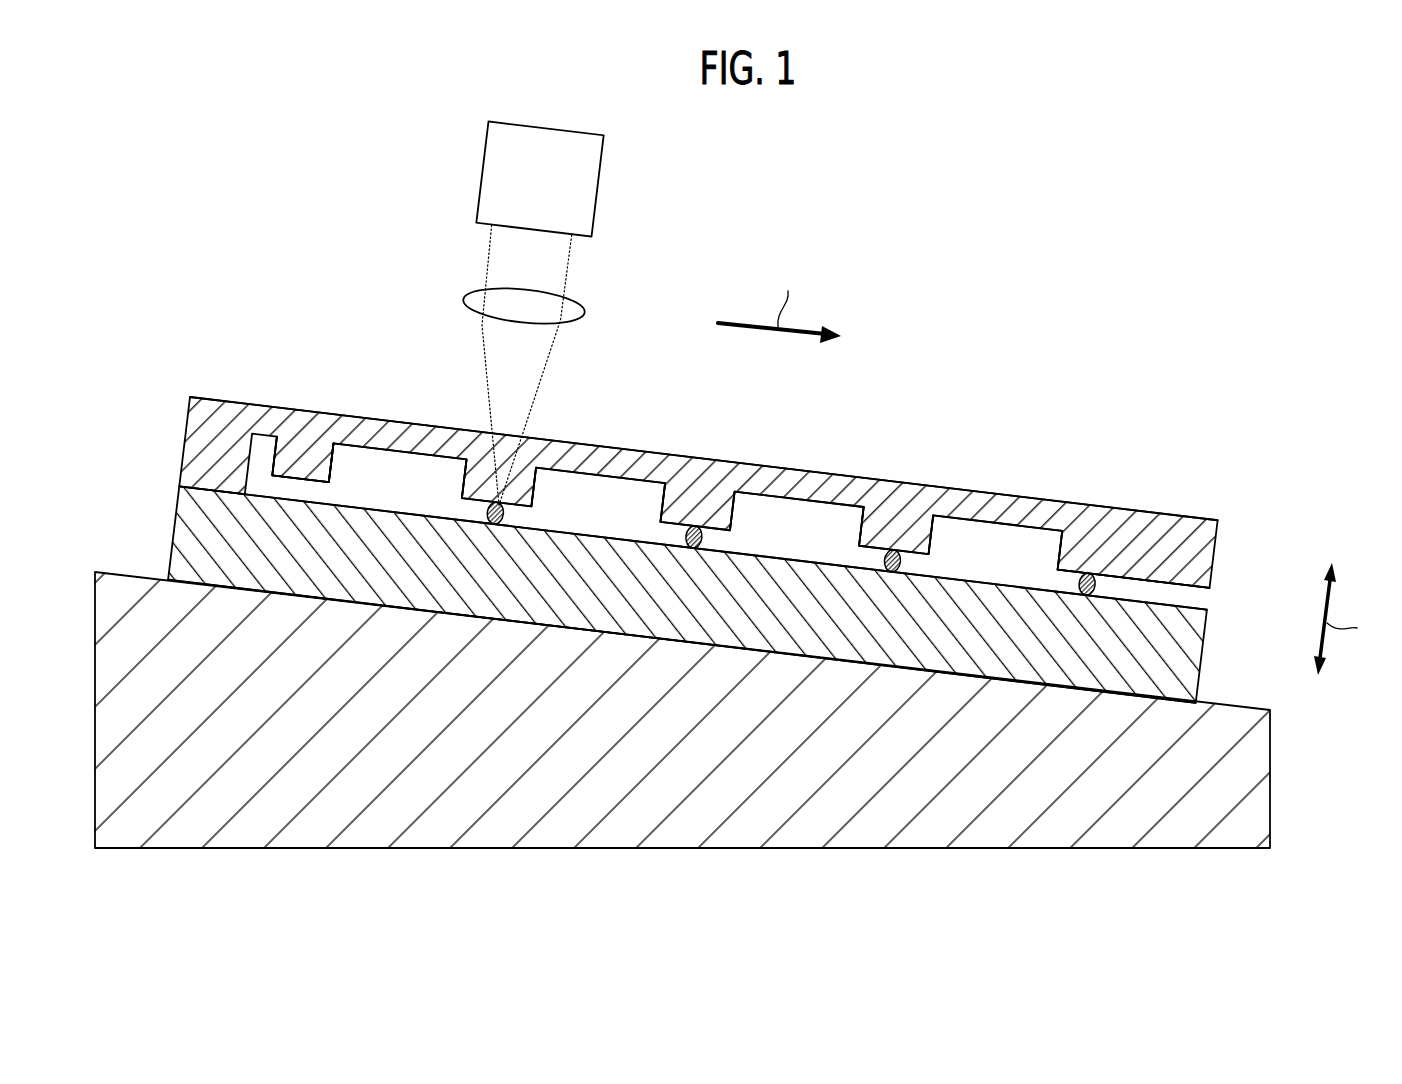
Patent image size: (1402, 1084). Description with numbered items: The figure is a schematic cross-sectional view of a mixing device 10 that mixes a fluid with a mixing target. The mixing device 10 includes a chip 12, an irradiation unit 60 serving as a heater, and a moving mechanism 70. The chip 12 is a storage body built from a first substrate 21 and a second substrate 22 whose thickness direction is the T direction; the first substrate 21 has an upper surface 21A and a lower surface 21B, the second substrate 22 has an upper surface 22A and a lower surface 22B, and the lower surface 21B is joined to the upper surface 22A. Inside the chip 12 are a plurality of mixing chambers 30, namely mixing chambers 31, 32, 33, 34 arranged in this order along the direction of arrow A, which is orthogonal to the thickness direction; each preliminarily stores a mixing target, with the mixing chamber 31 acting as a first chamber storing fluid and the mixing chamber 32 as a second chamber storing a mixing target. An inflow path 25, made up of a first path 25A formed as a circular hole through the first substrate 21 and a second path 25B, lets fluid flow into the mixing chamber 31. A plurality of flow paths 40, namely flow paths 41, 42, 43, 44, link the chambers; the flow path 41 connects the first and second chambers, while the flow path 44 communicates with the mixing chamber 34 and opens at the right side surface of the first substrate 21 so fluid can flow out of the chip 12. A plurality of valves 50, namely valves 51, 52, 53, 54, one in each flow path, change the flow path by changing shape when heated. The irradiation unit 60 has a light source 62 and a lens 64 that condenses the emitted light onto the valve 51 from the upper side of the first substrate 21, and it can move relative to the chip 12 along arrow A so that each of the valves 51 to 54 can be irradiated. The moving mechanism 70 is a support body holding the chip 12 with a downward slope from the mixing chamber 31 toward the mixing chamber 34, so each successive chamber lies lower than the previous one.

The mixing device 10 is at (171, 186).
The chip 12 is at (182, 398).
The first substrate 21 is at (187, 447).
The upper surface 21A is at (1185, 516).
The lower surface 21B is at (1194, 594).
The second substrate 22 is at (177, 537).
The upper surface 22A is at (1183, 608).
The lower surface 22B is at (1178, 705).
The inflow path 25 is at (343, 318).
The first path 25A is at (263, 417).
The second path 25B is at (293, 483).
The mixing chambers 30 is at (695, 467).
The mixing chamber 31 is at (344, 452).
The mixing chamber 32 is at (540, 478).
The mixing chamber 33 is at (742, 502).
The mixing chamber 34 is at (950, 520).
The flow paths 40 is at (802, 455).
The flow path 41 is at (465, 505).
The flow path 42 is at (660, 533).
The flow path 43 is at (865, 558).
The flow path 44 is at (1157, 585).
The valves 50 is at (812, 483).
The valve 51 is at (508, 513).
The valve 52 is at (704, 540).
The valve 53 is at (906, 562).
The valve 54 is at (1094, 575).
The irradiation unit 60 is at (474, 146).
The light source 62 is at (588, 186).
The lens 64 is at (579, 311).
The moving mechanism 70 is at (224, 858).